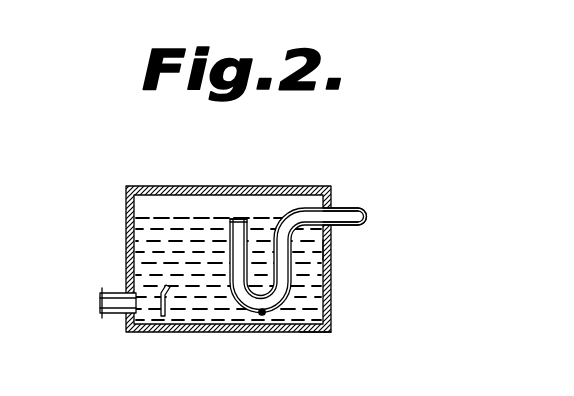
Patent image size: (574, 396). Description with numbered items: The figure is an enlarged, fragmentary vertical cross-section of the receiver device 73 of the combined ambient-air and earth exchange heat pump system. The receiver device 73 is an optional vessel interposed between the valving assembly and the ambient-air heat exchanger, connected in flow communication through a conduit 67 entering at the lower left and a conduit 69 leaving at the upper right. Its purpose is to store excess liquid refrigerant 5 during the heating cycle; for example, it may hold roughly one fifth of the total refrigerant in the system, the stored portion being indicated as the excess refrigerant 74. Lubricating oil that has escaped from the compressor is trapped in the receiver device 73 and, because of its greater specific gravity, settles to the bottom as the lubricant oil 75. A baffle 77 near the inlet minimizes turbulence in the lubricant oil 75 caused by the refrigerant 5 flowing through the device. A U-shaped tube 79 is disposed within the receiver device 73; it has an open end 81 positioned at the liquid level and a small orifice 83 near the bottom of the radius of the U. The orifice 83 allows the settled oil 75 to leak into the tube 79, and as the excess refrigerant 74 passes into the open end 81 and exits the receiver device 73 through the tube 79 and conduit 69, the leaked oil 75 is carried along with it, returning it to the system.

The liquid refrigerant 5 is at (145, 258).
The conduit 67 is at (118, 313).
The conduit 69 is at (343, 216).
The receiver device 73 is at (157, 187).
The excess refrigerant 74 is at (320, 255).
The lubricant oil 75 is at (306, 327).
The baffle 77 is at (168, 301).
The U-shaped tube 79 is at (287, 284).
The open end 81 is at (237, 223).
The orifice 83 is at (262, 315).